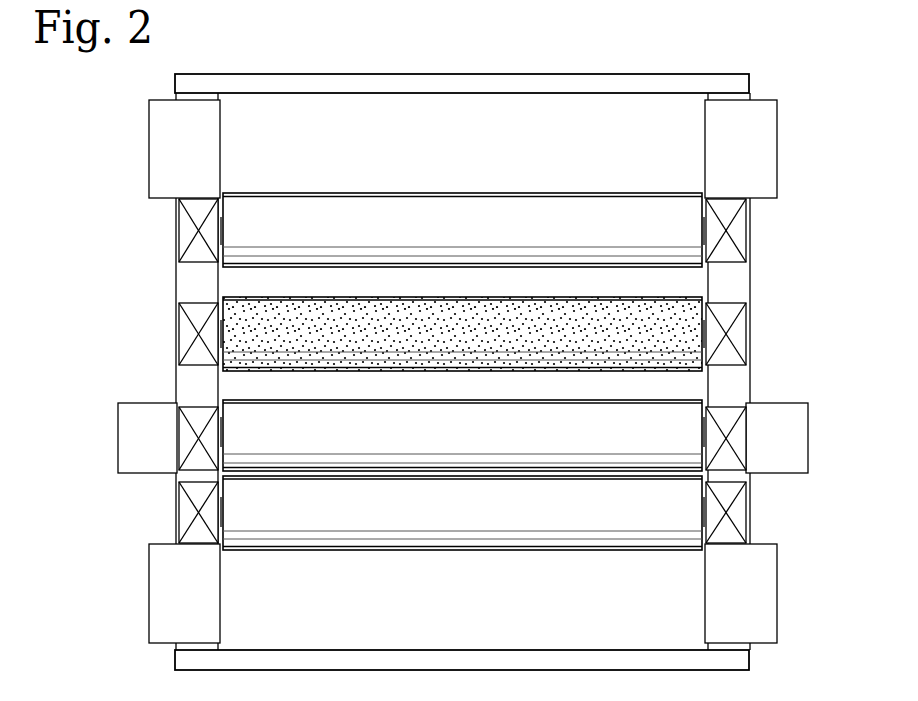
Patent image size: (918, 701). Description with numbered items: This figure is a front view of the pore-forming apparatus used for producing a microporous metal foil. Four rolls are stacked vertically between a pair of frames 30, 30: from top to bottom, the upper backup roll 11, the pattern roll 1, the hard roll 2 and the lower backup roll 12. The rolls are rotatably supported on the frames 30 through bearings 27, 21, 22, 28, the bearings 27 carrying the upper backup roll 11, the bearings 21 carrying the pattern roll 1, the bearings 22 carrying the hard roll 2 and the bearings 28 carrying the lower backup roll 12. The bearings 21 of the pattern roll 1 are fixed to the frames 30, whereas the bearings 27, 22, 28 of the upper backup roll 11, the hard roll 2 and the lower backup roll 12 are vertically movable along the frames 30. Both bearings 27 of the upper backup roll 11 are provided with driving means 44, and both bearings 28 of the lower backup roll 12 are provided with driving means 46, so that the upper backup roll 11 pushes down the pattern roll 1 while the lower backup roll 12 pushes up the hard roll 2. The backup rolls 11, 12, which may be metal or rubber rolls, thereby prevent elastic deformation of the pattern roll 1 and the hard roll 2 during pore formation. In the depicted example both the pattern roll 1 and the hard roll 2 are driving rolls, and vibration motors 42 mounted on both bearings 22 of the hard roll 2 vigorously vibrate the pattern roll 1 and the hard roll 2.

The pattern roll 1 is at (662, 307).
The hard roll 2 is at (650, 413).
The upper backup roll 11 is at (662, 237).
The lower backup roll 12 is at (662, 520).
The bearing of pattern roll 21 is at (185, 337).
The bearing of hard roll 22 is at (185, 423).
The bearing of upper backup roll 27 is at (185, 229).
The bearing of lower backup roll 28 is at (185, 510).
The frame 30 is at (185, 284).
The vibration motor 42 is at (127, 435).
The driving means for upper backup roll 44 is at (158, 146).
The driving means for lower backup roll 46 is at (160, 585).